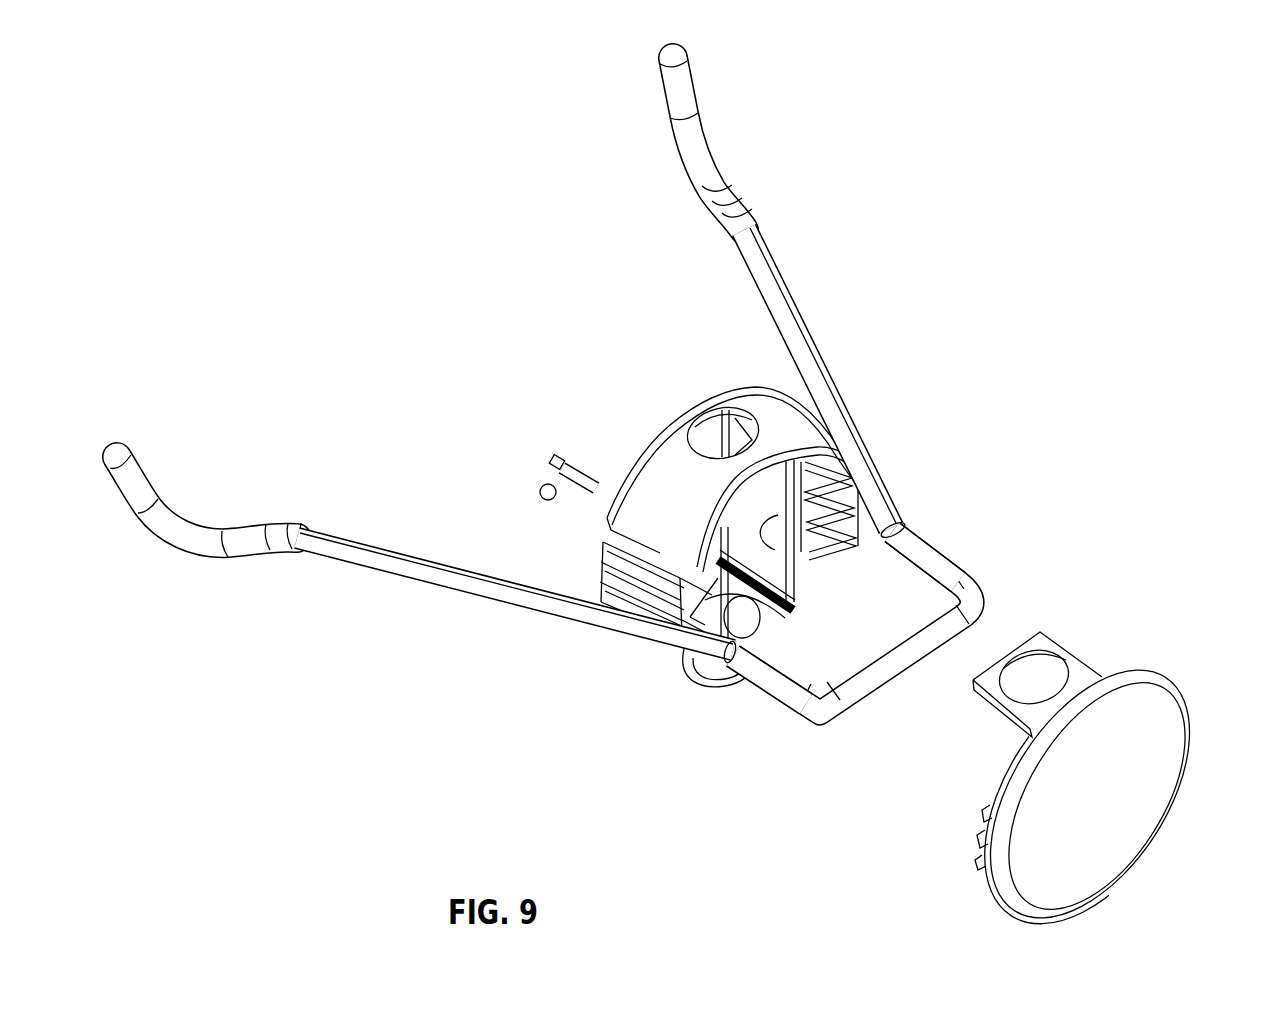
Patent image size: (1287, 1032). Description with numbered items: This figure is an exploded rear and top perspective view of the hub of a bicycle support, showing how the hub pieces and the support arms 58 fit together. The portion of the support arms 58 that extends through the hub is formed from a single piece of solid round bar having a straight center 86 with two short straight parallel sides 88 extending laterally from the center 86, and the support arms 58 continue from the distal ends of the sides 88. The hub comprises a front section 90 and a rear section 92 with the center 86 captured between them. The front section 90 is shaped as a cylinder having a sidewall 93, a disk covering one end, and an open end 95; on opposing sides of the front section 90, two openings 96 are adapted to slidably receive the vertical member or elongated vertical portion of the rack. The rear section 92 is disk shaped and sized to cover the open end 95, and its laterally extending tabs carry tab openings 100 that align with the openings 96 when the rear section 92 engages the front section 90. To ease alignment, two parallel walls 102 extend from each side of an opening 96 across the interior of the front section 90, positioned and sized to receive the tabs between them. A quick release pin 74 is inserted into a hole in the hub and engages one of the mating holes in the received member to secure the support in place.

The support arms 58 is at (793, 300).
The quick release pin 74 is at (548, 461).
The straight center 86 is at (881, 672).
The short straight parallel sides 88 is at (937, 546).
The front section 90 is at (851, 530).
The rear section 92 is at (1160, 773).
The sidewall 93 is at (641, 502).
The open end 95 is at (842, 452).
The openings 96 is at (693, 415).
The tab openings 100 is at (1038, 672).
The parallel walls 102 is at (601, 546).